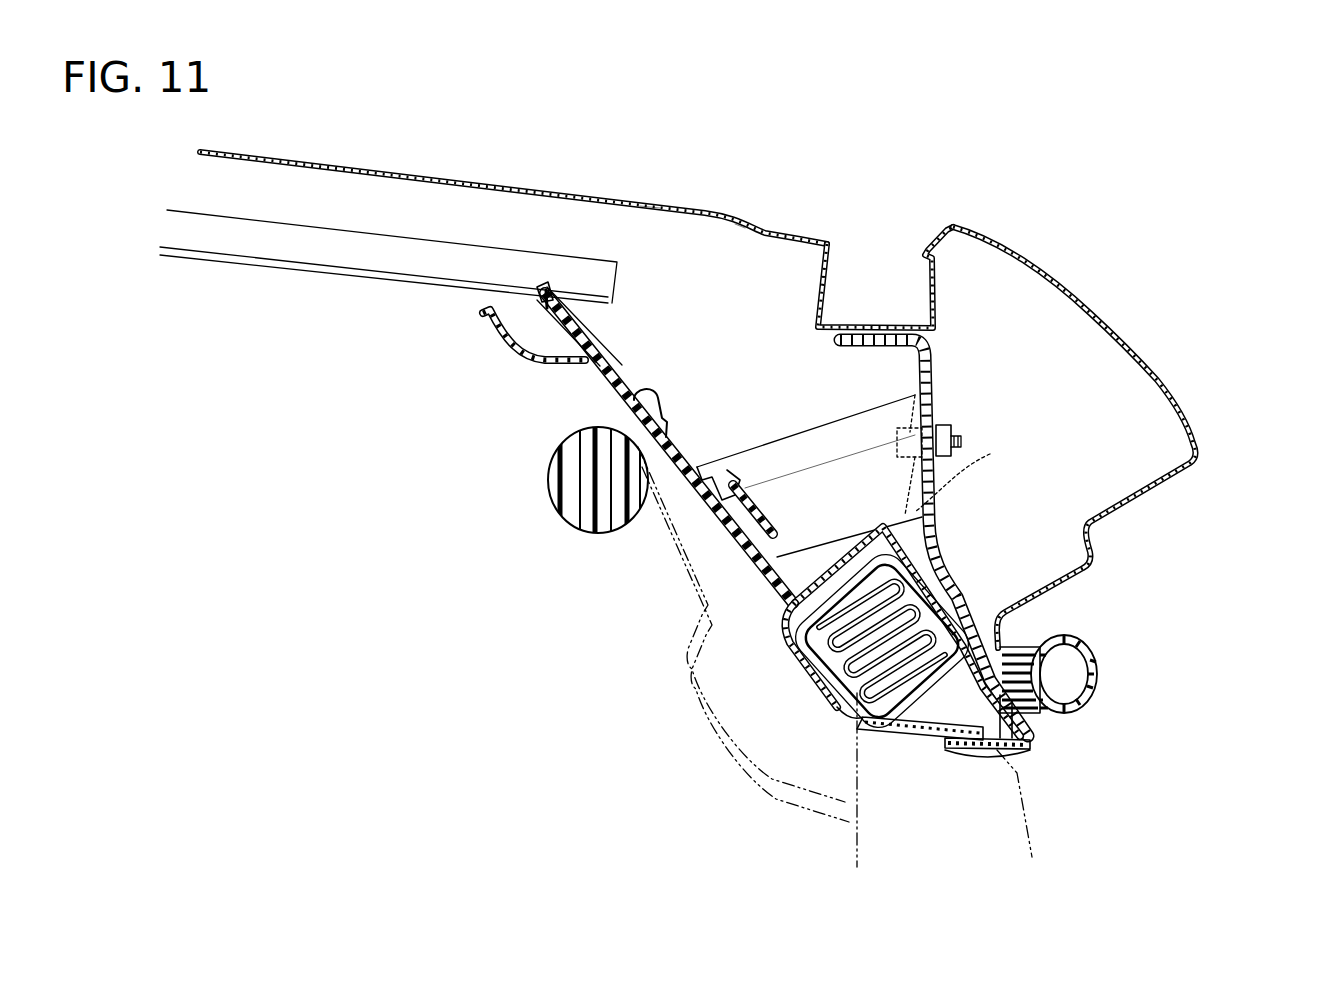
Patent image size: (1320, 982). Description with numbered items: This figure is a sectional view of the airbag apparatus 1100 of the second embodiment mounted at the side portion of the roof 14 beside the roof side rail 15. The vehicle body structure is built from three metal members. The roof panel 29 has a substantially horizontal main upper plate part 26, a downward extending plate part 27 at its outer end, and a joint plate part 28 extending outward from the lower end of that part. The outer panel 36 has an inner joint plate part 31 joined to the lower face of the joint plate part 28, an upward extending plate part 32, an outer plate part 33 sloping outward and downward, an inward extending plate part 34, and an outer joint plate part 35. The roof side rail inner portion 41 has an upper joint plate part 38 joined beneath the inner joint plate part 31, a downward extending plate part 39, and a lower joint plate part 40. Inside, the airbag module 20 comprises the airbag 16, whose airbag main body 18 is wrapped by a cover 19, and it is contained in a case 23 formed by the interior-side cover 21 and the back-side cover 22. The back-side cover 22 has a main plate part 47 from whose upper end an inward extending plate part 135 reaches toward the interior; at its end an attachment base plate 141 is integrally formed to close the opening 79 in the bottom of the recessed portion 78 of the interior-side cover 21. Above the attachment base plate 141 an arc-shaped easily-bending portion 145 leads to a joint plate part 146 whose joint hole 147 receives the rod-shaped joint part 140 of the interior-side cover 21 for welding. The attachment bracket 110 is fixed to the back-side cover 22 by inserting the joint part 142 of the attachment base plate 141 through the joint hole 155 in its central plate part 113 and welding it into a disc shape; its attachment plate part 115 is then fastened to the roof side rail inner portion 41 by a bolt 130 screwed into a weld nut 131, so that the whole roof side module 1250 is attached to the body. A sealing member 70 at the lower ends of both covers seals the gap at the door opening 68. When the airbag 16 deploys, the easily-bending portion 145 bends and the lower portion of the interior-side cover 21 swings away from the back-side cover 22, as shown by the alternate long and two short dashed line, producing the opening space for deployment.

The roof 14 is at (594, 186).
The main upper plate part 26 is at (645, 204).
The roof panel 29 is at (740, 216).
The downward extending plate part 27 is at (830, 276).
The joint plate part 28 is at (863, 330).
The inner joint plate part 31 is at (913, 330).
The upward extending plate part 32 is at (937, 290).
The roof side rail 15 is at (1034, 254).
The outer plate part 33 is at (1097, 307).
The outer panel 36 is at (1208, 453).
The inward extending plate part 34 is at (1118, 518).
The upper joint plate part 38 is at (932, 345).
The downward extending plate part 39 is at (932, 386).
The roof side rail inner portion 41 is at (960, 546).
The attachment bracket 110 is at (770, 434).
The joint part 142 is at (760, 470).
The central plate part 113 is at (712, 476).
The joint hole 155 is at (740, 517).
The weld nut 131 is at (952, 428).
The bolt 130 is at (963, 441).
The attachment plate part 115 is at (971, 471).
The attachment base plate 141 is at (680, 410).
The easily-bending portion 145 is at (658, 396).
The joint part 140 is at (582, 322).
The joint plate part 146 is at (548, 285).
The joint hole 147 is at (540, 303).
The opening 79 is at (655, 466).
The recessed portion 78 is at (690, 546).
The interior-side cover 21 is at (702, 760).
The case 23 is at (810, 802).
The back-side cover 22 is at (950, 586).
The main plate part 47 is at (962, 607).
The cover 19 is at (812, 662).
The airbag 16 is at (828, 716).
The airbag module 20 is at (940, 732).
The airbag main body 18 is at (862, 722).
The lower joint plate part 40 is at (1037, 749).
The outer joint plate part 35 is at (1040, 743).
The roof side module 1250 is at (1037, 762).
The airbag apparatus 1100 is at (1026, 772).
The sealing member 70 is at (1100, 660).
The door opening 68 is at (1085, 722).
The inward extending plate part 135 is at (945, 524).